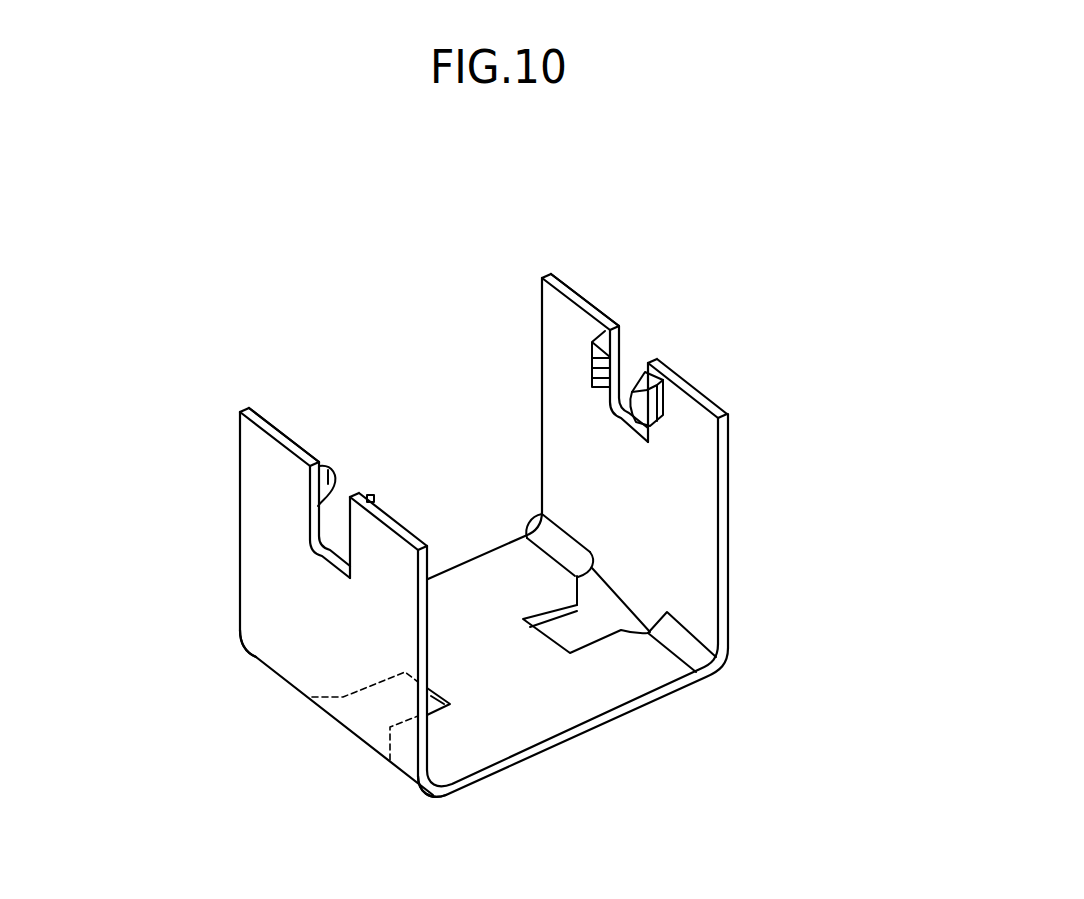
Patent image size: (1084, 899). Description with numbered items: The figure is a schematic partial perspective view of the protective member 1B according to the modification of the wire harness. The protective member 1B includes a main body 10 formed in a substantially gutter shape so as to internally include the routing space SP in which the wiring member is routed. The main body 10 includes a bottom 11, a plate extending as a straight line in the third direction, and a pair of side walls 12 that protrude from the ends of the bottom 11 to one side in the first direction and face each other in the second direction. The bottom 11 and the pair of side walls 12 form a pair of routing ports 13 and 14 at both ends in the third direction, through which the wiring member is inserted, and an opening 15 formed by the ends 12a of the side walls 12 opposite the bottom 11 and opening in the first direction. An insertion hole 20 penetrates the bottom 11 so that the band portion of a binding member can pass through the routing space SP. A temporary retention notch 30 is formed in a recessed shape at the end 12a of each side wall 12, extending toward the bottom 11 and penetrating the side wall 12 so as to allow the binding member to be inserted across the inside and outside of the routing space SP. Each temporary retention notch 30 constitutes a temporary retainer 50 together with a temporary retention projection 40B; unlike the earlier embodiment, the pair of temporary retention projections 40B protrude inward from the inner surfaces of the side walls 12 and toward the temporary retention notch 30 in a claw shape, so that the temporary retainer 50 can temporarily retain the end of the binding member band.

The protective member 1B is at (200, 457).
The main body 10 is at (768, 533).
The bottom 11 is at (484, 752).
The side wall 12 is at (263, 447).
The end of the side wall 12a is at (292, 444).
The routing port 13 is at (467, 766).
The routing port 14 is at (521, 373).
The opening 15 is at (581, 329).
The insertion hole 20 is at (603, 635).
The temporary retention notch 30 is at (312, 548).
The temporary retention projection 40B is at (327, 466).
The temporary retainer 50 is at (509, 369).
The routing space SP is at (677, 517).